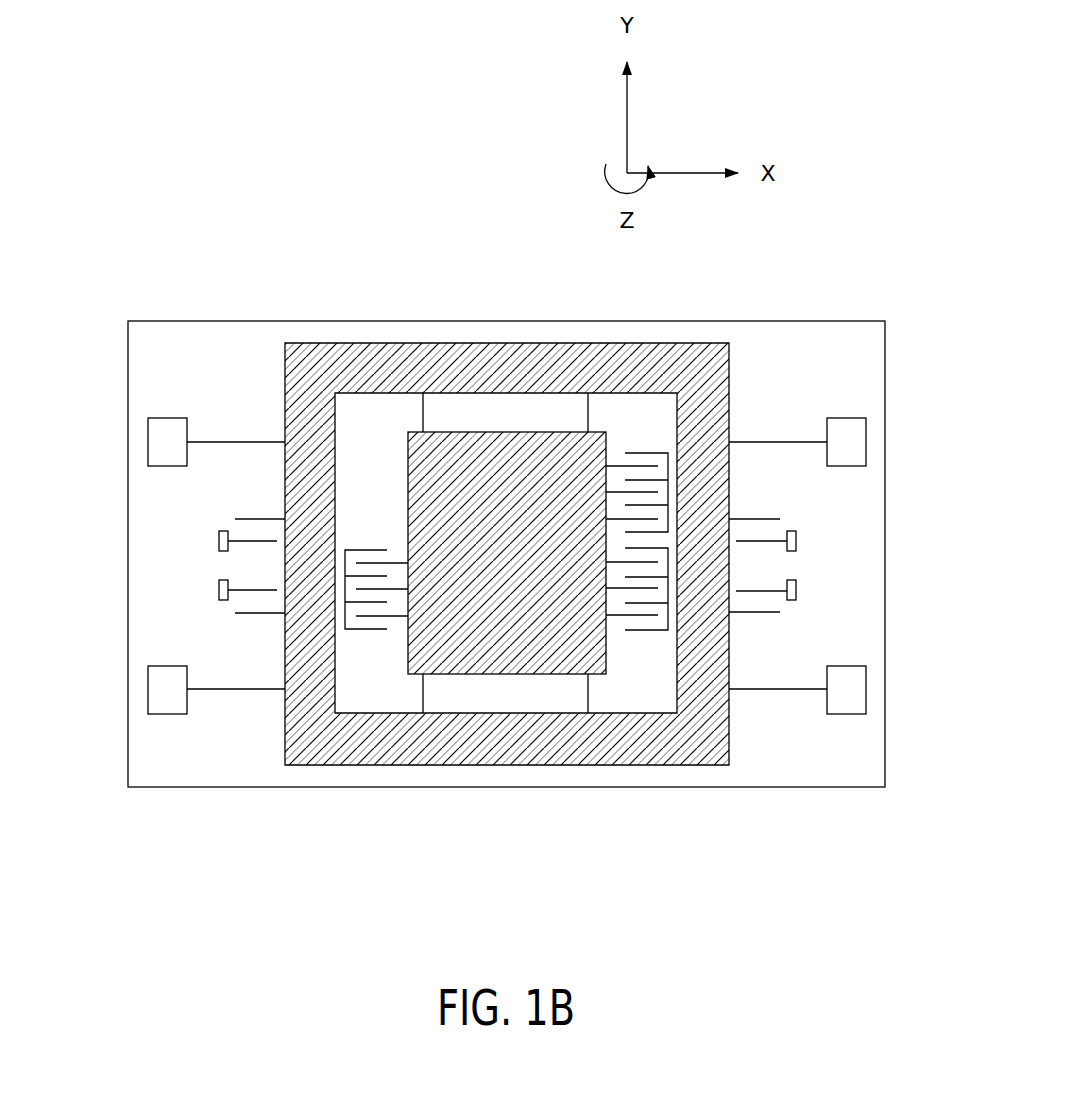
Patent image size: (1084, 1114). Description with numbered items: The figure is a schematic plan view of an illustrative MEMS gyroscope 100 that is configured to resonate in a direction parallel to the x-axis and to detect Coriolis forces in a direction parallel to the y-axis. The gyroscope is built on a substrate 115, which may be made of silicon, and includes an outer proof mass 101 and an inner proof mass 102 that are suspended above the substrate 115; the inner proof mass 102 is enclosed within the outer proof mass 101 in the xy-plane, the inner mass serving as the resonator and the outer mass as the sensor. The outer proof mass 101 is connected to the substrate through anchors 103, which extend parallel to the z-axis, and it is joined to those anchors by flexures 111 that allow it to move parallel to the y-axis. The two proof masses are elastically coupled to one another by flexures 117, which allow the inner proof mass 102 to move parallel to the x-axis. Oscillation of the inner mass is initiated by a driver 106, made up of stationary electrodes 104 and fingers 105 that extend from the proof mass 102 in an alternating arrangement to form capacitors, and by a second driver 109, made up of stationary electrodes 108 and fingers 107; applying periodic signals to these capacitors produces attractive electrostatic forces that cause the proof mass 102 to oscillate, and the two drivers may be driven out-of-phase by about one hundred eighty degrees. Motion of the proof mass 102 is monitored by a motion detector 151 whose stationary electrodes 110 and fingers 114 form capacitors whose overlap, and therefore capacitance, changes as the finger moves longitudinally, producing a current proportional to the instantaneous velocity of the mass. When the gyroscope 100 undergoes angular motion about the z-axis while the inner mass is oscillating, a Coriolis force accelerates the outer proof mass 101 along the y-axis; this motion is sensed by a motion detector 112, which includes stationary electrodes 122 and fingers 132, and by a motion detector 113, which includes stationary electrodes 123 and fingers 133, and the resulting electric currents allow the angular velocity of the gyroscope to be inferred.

The MEMS gyroscope 100 is at (171, 174).
The proof mass 101 is at (310, 394).
The proof mass 102 is at (493, 565).
The anchors 103 is at (155, 442).
The stationary electrodes 104 is at (365, 630).
The fingers 105 is at (397, 616).
The driver 106 is at (355, 653).
The fingers 107 is at (615, 615).
The stationary electrodes 108 is at (645, 630).
The driver 109 is at (660, 653).
The stationary electrodes 110 is at (660, 452).
The flexures 111 is at (235, 442).
The motion detector 112 is at (835, 574).
The motion detector 113 is at (188, 574).
The fingers 114 is at (617, 467).
The substrate 115 is at (127, 345).
The flexures 117 is at (428, 412).
The stationary electrodes 122 is at (780, 537).
The stationary electrodes 123 is at (233, 528).
The fingers 132 is at (753, 613).
The fingers 133 is at (260, 614).
The motion detector 151 is at (641, 420).